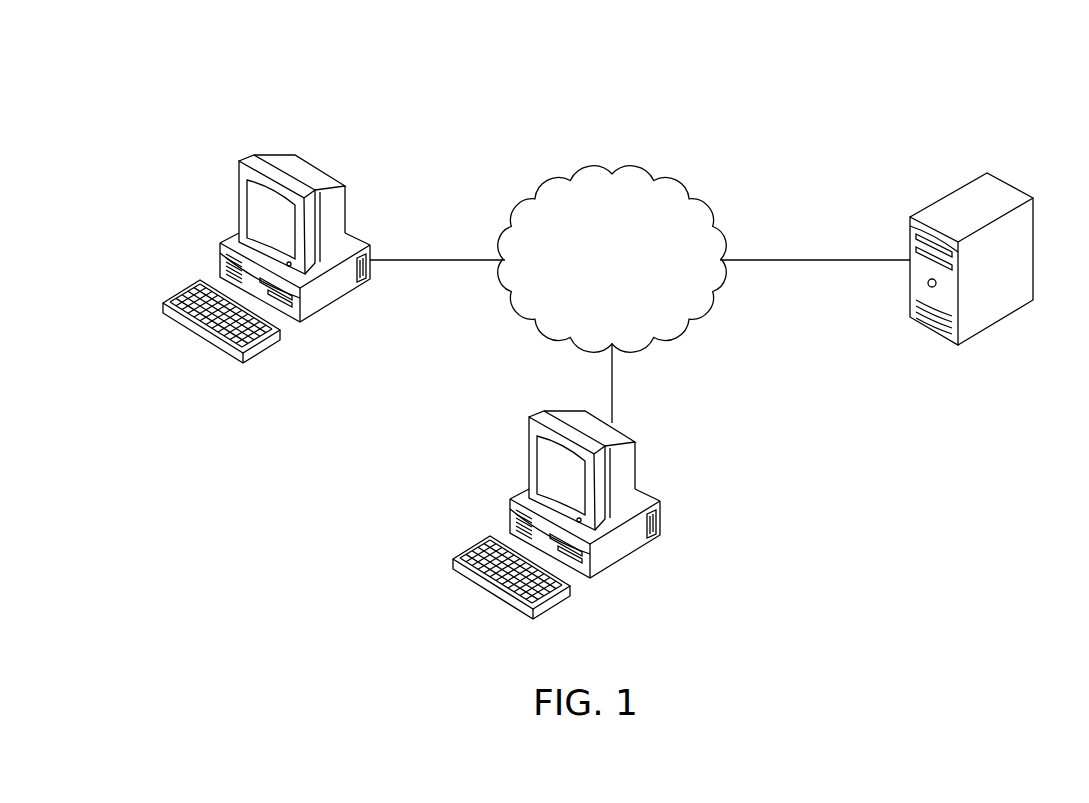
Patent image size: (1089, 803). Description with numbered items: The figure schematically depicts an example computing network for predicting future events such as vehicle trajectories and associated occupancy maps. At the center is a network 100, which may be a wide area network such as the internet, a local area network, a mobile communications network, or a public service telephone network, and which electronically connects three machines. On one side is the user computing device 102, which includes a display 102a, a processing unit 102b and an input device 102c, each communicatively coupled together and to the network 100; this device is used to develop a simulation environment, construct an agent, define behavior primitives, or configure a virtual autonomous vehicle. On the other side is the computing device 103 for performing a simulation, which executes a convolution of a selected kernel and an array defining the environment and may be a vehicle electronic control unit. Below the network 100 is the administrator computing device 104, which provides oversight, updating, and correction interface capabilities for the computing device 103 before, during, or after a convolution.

The network 100 is at (697, 188).
The user computing device 102 is at (285, 215).
The display 102a is at (238, 174).
The processing unit 102b is at (323, 303).
The input device 102c is at (257, 348).
The computing device 103 is at (1018, 170).
The administrator computing device 104 is at (660, 456).